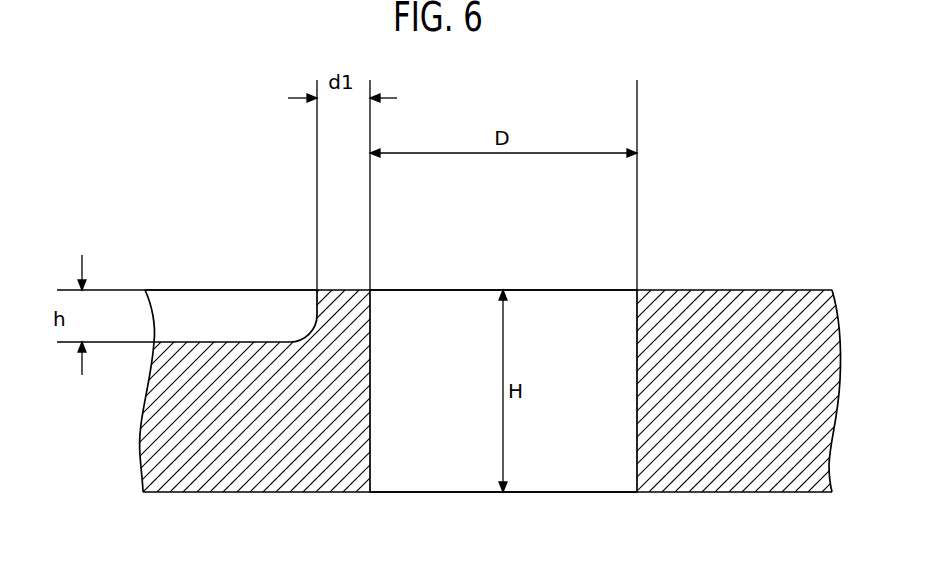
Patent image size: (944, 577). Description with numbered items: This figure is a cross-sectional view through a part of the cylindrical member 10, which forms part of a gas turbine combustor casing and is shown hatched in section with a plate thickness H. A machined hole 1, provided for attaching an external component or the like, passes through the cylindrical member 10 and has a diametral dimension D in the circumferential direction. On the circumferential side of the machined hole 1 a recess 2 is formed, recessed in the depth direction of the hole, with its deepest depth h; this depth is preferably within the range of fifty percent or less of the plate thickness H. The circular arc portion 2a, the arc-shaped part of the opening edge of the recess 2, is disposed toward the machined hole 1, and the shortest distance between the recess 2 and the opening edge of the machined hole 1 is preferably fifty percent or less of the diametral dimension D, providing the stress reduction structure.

The machined hole 1 is at (637, 472).
The recess 2 is at (180, 305).
The circular arc portion 2a is at (317, 290).
The cylindrical member 10 is at (737, 318).